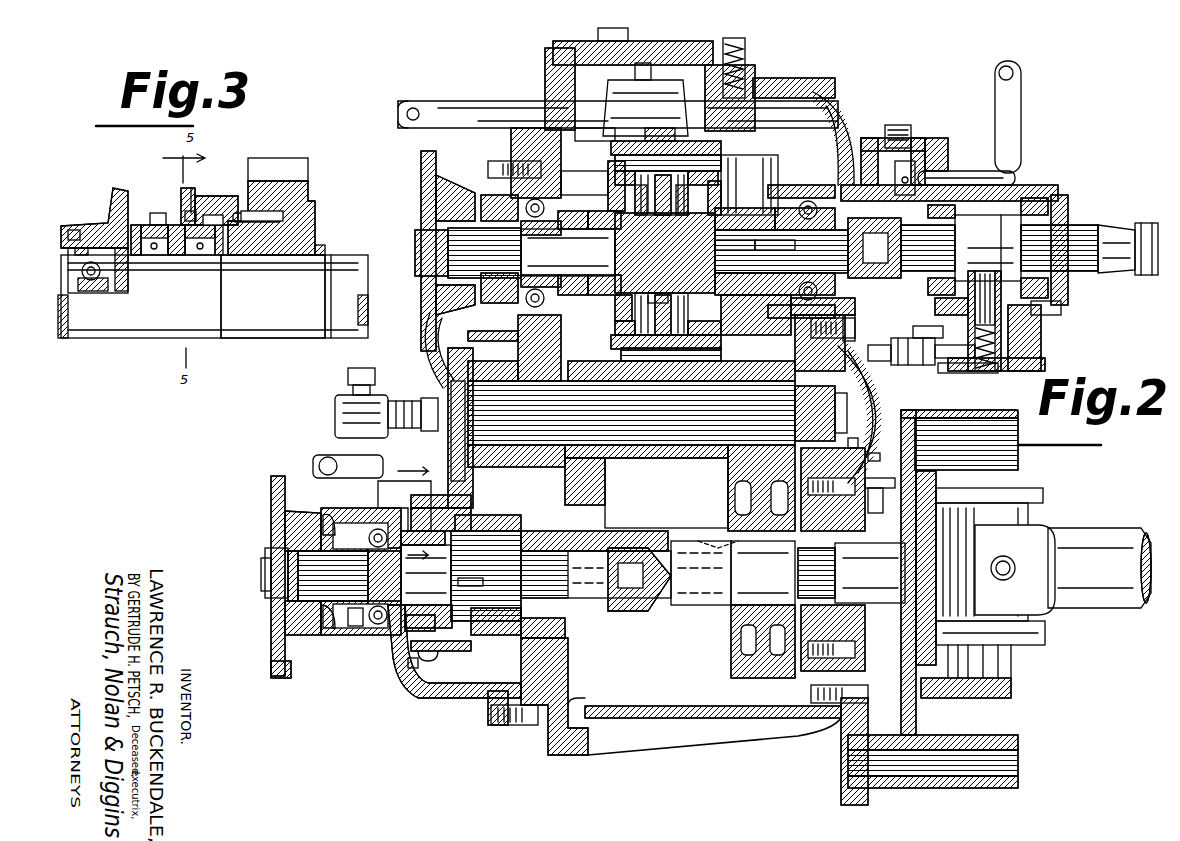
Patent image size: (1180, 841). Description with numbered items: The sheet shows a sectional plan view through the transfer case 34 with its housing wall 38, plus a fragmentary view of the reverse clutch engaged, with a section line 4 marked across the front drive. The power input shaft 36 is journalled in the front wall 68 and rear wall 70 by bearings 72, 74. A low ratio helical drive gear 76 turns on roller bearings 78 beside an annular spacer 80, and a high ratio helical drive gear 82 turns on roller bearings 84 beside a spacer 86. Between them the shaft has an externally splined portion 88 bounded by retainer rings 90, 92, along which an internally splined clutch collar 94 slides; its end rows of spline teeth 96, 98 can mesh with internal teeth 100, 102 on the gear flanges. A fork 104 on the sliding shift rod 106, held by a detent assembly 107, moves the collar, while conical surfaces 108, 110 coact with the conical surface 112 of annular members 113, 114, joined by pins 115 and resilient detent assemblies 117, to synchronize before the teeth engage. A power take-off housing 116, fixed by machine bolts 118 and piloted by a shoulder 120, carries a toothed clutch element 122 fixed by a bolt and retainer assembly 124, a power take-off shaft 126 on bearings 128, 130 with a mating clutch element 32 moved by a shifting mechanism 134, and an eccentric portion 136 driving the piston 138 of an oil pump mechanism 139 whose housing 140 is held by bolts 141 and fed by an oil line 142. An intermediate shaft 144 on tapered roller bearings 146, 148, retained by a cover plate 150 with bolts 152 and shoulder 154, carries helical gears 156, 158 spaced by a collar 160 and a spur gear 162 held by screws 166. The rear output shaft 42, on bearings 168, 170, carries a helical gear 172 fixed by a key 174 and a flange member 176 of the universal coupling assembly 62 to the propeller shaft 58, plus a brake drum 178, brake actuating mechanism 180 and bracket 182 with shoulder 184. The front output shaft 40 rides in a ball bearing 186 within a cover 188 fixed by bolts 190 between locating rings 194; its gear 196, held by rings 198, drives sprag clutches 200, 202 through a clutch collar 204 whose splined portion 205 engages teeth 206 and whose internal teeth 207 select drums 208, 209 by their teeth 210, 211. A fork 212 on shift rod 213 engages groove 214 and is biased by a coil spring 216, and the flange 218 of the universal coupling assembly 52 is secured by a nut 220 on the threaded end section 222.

In FIG. 2, the section line 4- 4 is at (419, 513).
In FIG. 2, the output shaft coupling 32 is at (870, 210).
In FIG. 2, the front wall 34 is at (410, 153).
In FIG. 2, the power input shaft 36 is at (479, 251).
In FIG. 2, the housing bottom 38 is at (730, 740).
In FIG. 3, the front output shaft 40 is at (312, 272).
In FIG. 2, the front output shaft 40 is at (426, 579).
In FIG. 2, the rear output shaft 42 is at (640, 603).
In FIG. 2, the universal coupling assembly 52 is at (261, 483).
In FIG. 2, the propeller shaft 58 is at (1115, 522).
In FIG. 2, the universal coupling assembly 62 is at (1035, 488).
In FIG. 2, the front wall 68 is at (537, 70).
In FIG. 2, the rear wall 70 is at (834, 132).
In FIG. 2, the anti-friction bearing 72 is at (552, 221).
In FIG. 2, the anti-friction bearing 74 is at (775, 245).
In FIG. 2, the low ratio helical drive gear 76 is at (594, 177).
In FIG. 2, the roller bearings 78 is at (604, 230).
In FIG. 2, the annular spacer 80 is at (554, 272).
In FIG. 2, the high ratio helical drive gear 82 is at (795, 160).
In FIG. 2, the roller bearings 84 is at (795, 223).
In FIG. 2, the annular spacer 86 is at (783, 298).
In FIG. 2, the externally splined portion 88 is at (735, 248).
In FIG. 2, the annular bearing retainer ring 90 is at (604, 272).
In FIG. 2, the annular bearing retainer ring 92 is at (756, 315).
In FIG. 2, the clutch collar 94 is at (645, 212).
In FIG. 2, the spline teeth 96 is at (666, 334).
In FIG. 2, the spline teeth 98 is at (678, 333).
In FIG. 2, the spline teeth 100 is at (598, 163).
In FIG. 2, the spline teeth 102 is at (745, 223).
In FIG. 2, the fork 104 is at (645, 102).
In FIG. 2, the shift rod 106 is at (432, 92).
In FIG. 2, the detent assembly 107 is at (740, 70).
In FIG. 2, the external conical surface 108 is at (656, 149).
In FIG. 2, the external conical surface 110 is at (745, 147).
In FIG. 2, the internal conical surface 112 is at (681, 364).
In FIG. 2, the annular member 113 is at (595, 133).
In FIG. 2, the annular member 114 is at (718, 163).
In FIG. 2, the axially extending pins 115 is at (685, 163).
In FIG. 2, the power take-off housing 116 is at (890, 117).
In FIG. 2, the resilient detent assemblies 117 is at (650, 285).
In FIG. 2, the machine bolts 118 is at (848, 320).
In FIG. 2, the annular shoulder 120 is at (880, 305).
In FIG. 2, the toothed clutch element 122 is at (853, 160).
In FIG. 2, the bolt and retainer assembly 124 is at (775, 273).
In FIG. 2, the power take-off shaft 126 is at (1110, 218).
In FIG. 2, the anti-friction bearing 128 is at (1052, 190).
In FIG. 2, the anti-friction bearing 130 is at (947, 210).
In FIG. 2, the shifting mechanism 134 is at (937, 160).
In FIG. 2, the eccentric portion 136 is at (1000, 215).
In FIG. 2, the piston 138 is at (1033, 312).
In FIG. 2, the oil pump mechanism 139 is at (985, 365).
In FIG. 2, the pump housing 140 is at (960, 312).
In FIG. 2, the bolts 141 is at (925, 322).
In FIG. 2, the oil line 142 is at (880, 355).
In FIG. 2, the intermediate shaft 144 is at (650, 450).
In FIG. 2, the tapered roller bearing 146 is at (545, 425).
In FIG. 2, the tapered roller bearing 148 is at (878, 424).
In FIG. 2, the bearing cover plate 150 is at (885, 400).
In FIG. 2, the machine bolts 152 is at (884, 475).
In FIG. 2, the annular shoulder 154 is at (885, 457).
In FIG. 2, the helical gear 156 is at (598, 478).
In FIG. 2, the helical gear 158 is at (720, 460).
In FIG. 2, the spacing collar 160 is at (666, 493).
In FIG. 2, the spur gear 162 is at (468, 333).
In FIG. 2, the machine screws 166 is at (420, 388).
In FIG. 2, the tapered roller bearing 168 is at (560, 618).
In FIG. 2, the tapered roller bearing 170 is at (885, 493).
In FIG. 2, the helical gear 172 is at (730, 636).
In FIG. 2, the key 174 is at (705, 530).
In FIG. 2, the flange member 176 is at (900, 493).
In FIG. 2, the brake drum 178 is at (1010, 455).
In FIG. 2, the brake actuating mechanism 180 is at (1010, 735).
In FIG. 2, the bracket 182 is at (833, 738).
In FIG. 2, the annular shoulder 184 is at (820, 592).
In FIG. 3, the ball type anti-friction bearing 186 is at (85, 278).
In FIG. 2, the ball type anti-friction bearing 186 is at (368, 617).
In FIG. 3, the cover 188 is at (108, 190).
In FIG. 2, the cover 188 is at (408, 690).
In FIG. 2, the bolts 190 is at (520, 712).
In FIG. 2, the split resilient locating rings 194 is at (350, 618).
In FIG. 3, the gear 196 is at (307, 200).
In FIG. 2, the gear 196 is at (478, 706).
In FIG. 3, the split resilient rings 198 is at (250, 262).
In FIG. 2, the split resilient rings 198 is at (510, 560).
In FIG. 3, the sprag clutch 200 is at (137, 250).
In FIG. 2, the sprag clutch 200 is at (384, 576).
In FIG. 3, the sprag clutch 202 is at (203, 248).
In FIG. 2, the sprag clutch 202 is at (428, 607).
In FIG. 3, the clutch collar 204 is at (212, 188).
In FIG. 2, the clutch collar 204 is at (435, 653).
In FIG. 3, the internally splined portion 205 is at (303, 212).
In FIG. 2, the internally splined portion 205 is at (469, 580).
In FIG. 3, the clutch teeth 206 is at (245, 203).
In FIG. 2, the clutch teeth 206 is at (480, 600).
In FIG. 3, the clutch teeth 207 is at (178, 204).
In FIG. 2, the clutch teeth 207 is at (440, 500).
In FIG. 3, the outer drum 208 is at (115, 214).
In FIG. 2, the outer drum 208 is at (395, 505).
In FIG. 3, the outer drum 209 is at (192, 176).
In FIG. 2, the outer drum 209 is at (470, 523).
In FIG. 3, the peripheral teeth 210 is at (148, 205).
In FIG. 3, the peripheral teeth 211 is at (168, 247).
In FIG. 2, the fork 212 is at (370, 485).
In FIG. 2, the shift rod 213 is at (340, 447).
In FIG. 3, the annular groove 214 is at (210, 180).
In FIG. 2, the annular groove 214 is at (392, 662).
In FIG. 2, the coil spring 216 is at (455, 428).
In FIG. 2, the flange 218 is at (300, 673).
In FIG. 2, the nut 220 is at (280, 585).
In FIG. 2, the reduced threaded end section 222 is at (257, 570).